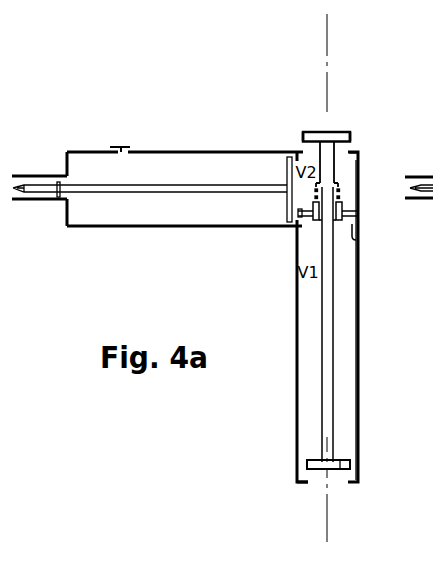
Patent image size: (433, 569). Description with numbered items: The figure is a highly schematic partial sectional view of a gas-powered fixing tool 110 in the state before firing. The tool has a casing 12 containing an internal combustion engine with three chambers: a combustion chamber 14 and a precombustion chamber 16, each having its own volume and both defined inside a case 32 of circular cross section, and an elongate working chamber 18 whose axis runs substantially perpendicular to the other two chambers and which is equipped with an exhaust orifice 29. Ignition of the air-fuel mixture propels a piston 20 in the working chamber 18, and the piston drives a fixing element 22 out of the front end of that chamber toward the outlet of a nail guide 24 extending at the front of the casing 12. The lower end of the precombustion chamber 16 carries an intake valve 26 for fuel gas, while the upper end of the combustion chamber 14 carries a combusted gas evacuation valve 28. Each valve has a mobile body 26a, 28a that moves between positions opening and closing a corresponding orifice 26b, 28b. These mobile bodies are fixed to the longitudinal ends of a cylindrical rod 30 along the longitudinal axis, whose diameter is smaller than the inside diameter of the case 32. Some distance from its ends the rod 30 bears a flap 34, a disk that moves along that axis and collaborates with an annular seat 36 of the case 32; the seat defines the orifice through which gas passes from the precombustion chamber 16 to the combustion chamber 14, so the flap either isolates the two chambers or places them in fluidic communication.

The gas-powered fixing tool 110 is at (205, 277).
The casing 12 is at (279, 317).
The combustion chamber 14 is at (345, 167).
The precombustion chamber 16 is at (342, 407).
The working chamber 18 is at (228, 162).
The piston 20 is at (148, 185).
The fixing element 22 is at (37, 185).
The nail guide 24 is at (30, 201).
The intake valve 26 is at (336, 485).
The mobile body 26a is at (343, 465).
The orifice 26b is at (318, 481).
The combusted gas evacuation valve 28 is at (320, 112).
The mobile body 28a is at (306, 131).
The orifice 28b is at (350, 131).
The exhaust orifice 29 is at (121, 146).
The cylindrical rod 30 is at (327, 348).
The case 32 is at (358, 290).
The flap 34 is at (342, 208).
The annular seat 36 is at (353, 229).